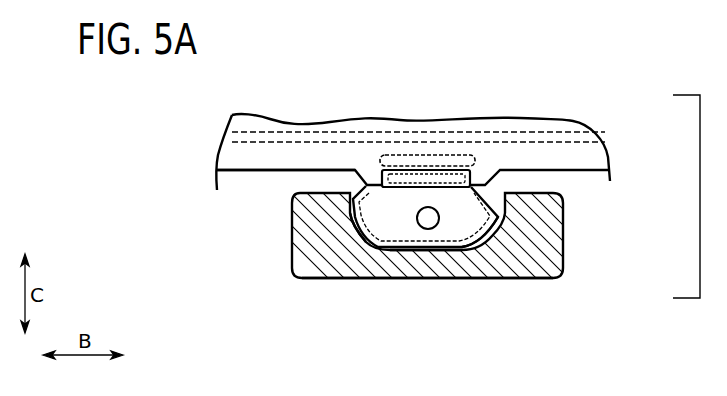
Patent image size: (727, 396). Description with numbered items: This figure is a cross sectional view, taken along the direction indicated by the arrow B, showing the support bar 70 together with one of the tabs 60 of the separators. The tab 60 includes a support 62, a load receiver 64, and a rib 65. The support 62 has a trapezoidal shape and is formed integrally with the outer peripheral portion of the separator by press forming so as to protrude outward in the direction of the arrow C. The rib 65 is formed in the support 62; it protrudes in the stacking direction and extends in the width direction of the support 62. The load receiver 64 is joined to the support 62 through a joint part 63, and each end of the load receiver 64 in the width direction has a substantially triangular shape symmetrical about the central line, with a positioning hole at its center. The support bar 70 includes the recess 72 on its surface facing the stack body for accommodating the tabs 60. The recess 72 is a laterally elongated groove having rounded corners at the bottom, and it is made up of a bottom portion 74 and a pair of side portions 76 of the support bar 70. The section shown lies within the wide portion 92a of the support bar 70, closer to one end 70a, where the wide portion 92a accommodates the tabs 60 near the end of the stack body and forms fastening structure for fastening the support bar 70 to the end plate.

The tab 60 is at (351, 222).
The support 62 is at (357, 174).
The joint part 63 is at (467, 197).
The load receiver 64 is at (492, 226).
The rib 65 is at (437, 163).
The support bar 70 is at (563, 277).
The one end 70a is at (375, 301).
The recess 72 is at (364, 240).
The bottom portion 74 is at (408, 258).
The side portions 76 is at (340, 234).
The wide portion 92a is at (318, 281).